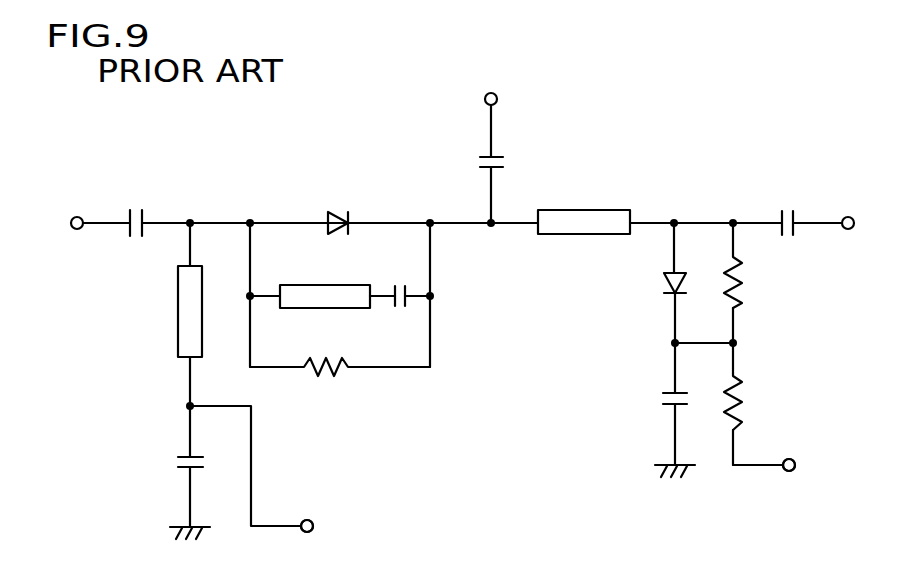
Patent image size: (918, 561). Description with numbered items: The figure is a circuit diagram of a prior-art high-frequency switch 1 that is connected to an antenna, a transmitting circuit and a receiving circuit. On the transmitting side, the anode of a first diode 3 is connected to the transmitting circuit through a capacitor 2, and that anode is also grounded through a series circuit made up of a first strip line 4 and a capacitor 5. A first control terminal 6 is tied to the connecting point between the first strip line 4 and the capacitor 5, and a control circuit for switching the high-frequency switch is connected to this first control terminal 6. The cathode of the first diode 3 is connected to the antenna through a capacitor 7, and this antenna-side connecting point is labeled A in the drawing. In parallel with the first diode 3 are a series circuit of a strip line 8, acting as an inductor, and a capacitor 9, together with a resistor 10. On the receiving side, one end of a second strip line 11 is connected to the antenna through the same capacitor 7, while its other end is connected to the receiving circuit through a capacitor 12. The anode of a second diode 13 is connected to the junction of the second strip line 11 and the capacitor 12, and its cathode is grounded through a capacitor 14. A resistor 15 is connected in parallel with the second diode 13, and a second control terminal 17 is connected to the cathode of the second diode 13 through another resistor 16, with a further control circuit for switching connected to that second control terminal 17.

The high-frequency switch 1 is at (691, 93).
The capacitor 2 is at (143, 214).
The first diode 3 is at (331, 209).
The first strip line 4 is at (178, 318).
The capacitor 5 is at (188, 456).
The first control terminal 6 is at (313, 527).
The capacitor 7 is at (497, 156).
The strip line 8 is at (322, 308).
The capacitor 9 is at (393, 306).
The resistor 10 is at (348, 377).
The second strip line 11 is at (597, 209).
The capacitor 12 is at (780, 214).
The second diode 13 is at (664, 283).
The capacitor 14 is at (665, 405).
The resistor 15 is at (742, 285).
The resistor 16 is at (742, 390).
The second control terminal 17 is at (793, 472).
The node A is at (495, 228).